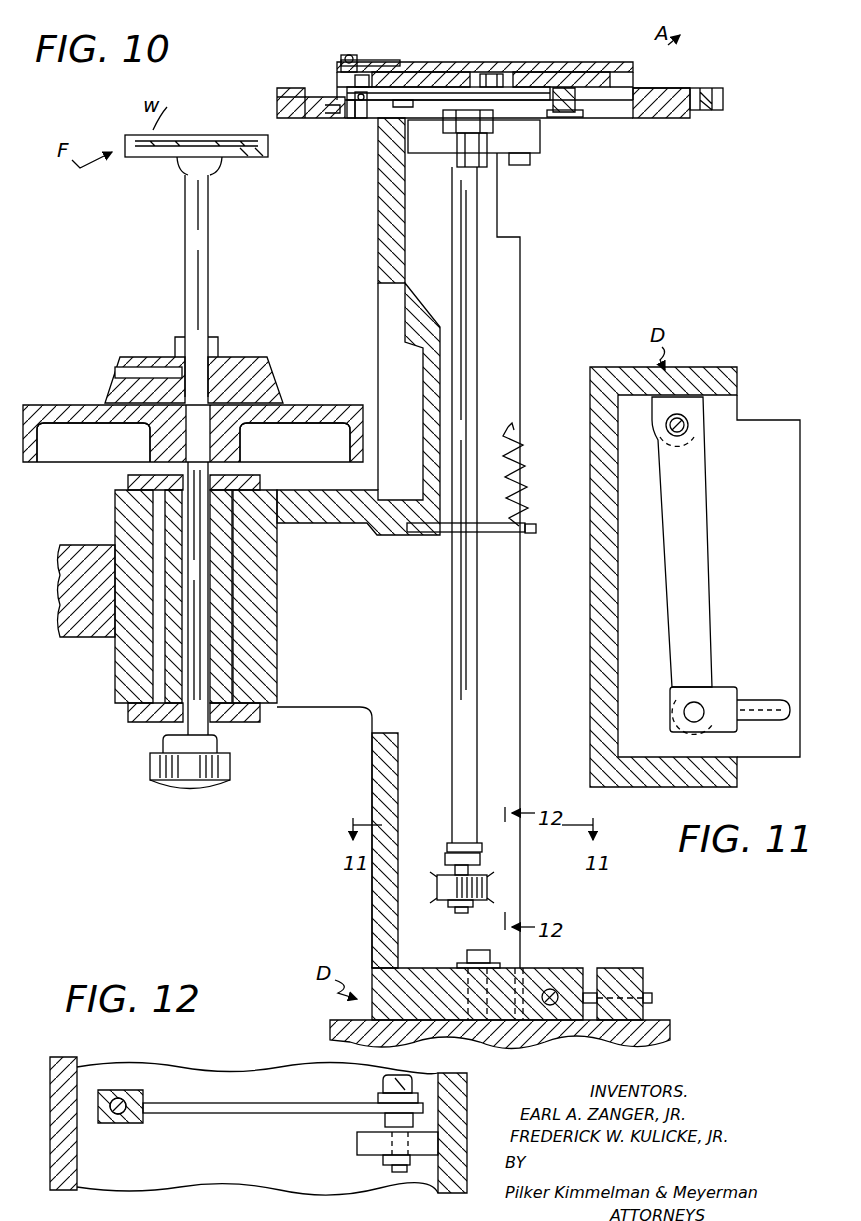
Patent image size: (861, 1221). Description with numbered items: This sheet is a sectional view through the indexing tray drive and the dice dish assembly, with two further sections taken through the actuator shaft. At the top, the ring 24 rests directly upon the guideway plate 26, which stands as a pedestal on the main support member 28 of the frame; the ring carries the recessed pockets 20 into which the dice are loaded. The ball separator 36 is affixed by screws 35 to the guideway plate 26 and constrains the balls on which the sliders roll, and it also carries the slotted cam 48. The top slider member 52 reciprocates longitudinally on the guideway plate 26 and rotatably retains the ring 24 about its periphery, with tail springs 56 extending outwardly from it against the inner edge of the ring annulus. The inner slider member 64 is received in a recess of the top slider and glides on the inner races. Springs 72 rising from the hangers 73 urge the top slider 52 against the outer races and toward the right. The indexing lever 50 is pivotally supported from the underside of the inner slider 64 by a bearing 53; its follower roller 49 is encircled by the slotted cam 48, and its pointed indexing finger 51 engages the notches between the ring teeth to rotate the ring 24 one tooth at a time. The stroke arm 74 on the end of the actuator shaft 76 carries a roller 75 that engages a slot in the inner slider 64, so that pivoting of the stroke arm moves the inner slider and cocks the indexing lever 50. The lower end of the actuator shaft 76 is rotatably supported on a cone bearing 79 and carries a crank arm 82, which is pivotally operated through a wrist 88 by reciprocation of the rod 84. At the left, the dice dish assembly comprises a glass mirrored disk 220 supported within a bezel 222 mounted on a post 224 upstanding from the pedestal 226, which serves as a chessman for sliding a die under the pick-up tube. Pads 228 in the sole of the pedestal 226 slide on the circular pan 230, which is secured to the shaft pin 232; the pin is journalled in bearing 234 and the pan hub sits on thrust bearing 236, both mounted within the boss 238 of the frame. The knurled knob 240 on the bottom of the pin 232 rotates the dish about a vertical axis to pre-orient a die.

In FIG. 10, the recessed pocket 20 is at (307, 90).
In FIG. 10, the ring 24 is at (643, 93).
In FIG. 10, the guideway plate 26 is at (278, 107).
In FIG. 10, the main support member 28 is at (380, 243).
In FIG. 10, the screws 35 is at (352, 118).
In FIG. 10, the ball separator 36 is at (330, 112).
In FIG. 10, the slotted cam 48 is at (376, 105).
In FIG. 10, the follower roller 49 is at (393, 88).
In FIG. 10, the indexing lever 50 is at (514, 103).
In FIG. 10, the indexing finger 51 is at (696, 112).
In FIG. 10, the top slider member 52 is at (473, 75).
In FIG. 10, the bearing 53 is at (560, 105).
In FIG. 10, the tail springs 56 is at (330, 88).
In FIG. 10, the inner slider member 64 is at (397, 92).
In FIG. 10, the springs 72 is at (527, 473).
In FIG. 10, the hangers 73 is at (536, 534).
In FIG. 10, the stroke arm 74 is at (455, 125).
In FIG. 10, the roller 75 is at (505, 78).
In FIG. 10, the actuator shaft 76 is at (462, 288).
In FIG. 11, the actuator shaft 76 is at (687, 428).
In FIG. 12, the actuator shaft 76 is at (383, 1083).
In FIG. 10, the cone bearing 79 is at (442, 874).
In FIG. 12, the cone bearing 79 is at (387, 1168).
In FIG. 10, the crank arm 82 is at (476, 857).
In FIG. 11, the crank arm 82 is at (693, 553).
In FIG. 12, the crank arm 82 is at (275, 1108).
In FIG. 11, the rod 84 is at (783, 707).
In FIG. 12, the rod 84 is at (115, 1113).
In FIG. 11, the wrist 88 is at (730, 687).
In FIG. 12, the wrist 88 is at (140, 1092).
In FIG. 10, the glass mirrored disk 220 is at (183, 132).
In FIG. 10, the bezel 222 is at (255, 152).
In FIG. 10, the post 224 is at (200, 242).
In FIG. 10, the pedestal 226 is at (247, 363).
In FIG. 10, the pads 228 is at (267, 417).
In FIG. 10, the circular pan 230 is at (305, 410).
In FIG. 10, the shaft pin 232 is at (197, 577).
In FIG. 10, the bearing 234 is at (217, 662).
In FIG. 10, the thrust bearing 236 is at (130, 483).
In FIG. 10, the boss 238 is at (263, 685).
In FIG. 10, the knurled knob 240 is at (217, 768).